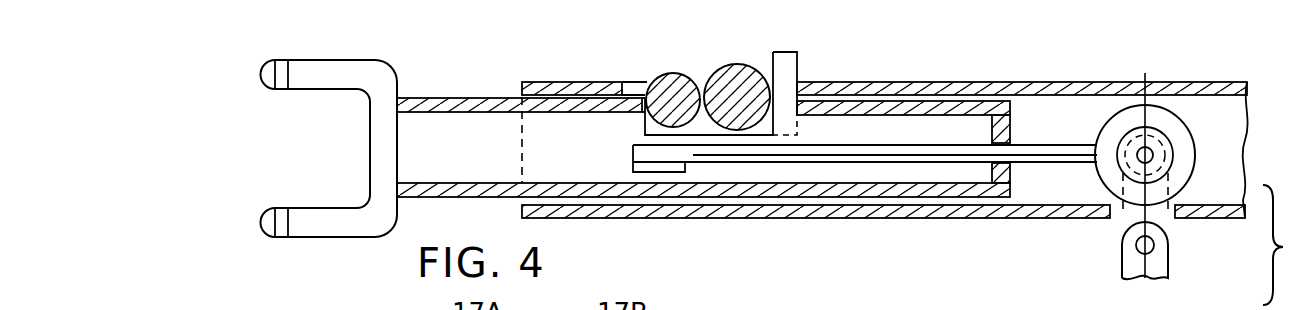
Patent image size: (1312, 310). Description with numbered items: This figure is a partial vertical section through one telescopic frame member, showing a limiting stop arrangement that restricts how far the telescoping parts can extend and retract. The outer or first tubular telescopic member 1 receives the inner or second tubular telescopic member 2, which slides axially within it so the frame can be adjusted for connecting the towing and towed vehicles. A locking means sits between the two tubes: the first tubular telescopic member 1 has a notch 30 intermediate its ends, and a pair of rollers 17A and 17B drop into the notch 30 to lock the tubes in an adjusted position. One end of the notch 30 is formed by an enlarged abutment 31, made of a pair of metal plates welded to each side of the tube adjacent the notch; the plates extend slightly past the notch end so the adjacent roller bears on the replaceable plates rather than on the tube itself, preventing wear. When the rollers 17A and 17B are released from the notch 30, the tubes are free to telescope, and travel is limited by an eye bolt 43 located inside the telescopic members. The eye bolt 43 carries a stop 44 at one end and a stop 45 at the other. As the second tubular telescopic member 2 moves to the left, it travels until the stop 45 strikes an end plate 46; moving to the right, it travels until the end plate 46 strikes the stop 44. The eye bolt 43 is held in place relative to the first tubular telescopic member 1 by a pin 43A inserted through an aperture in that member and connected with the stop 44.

The first tubular telescopic member 1 is at (1003, 78).
The second tubular telescopic member 2 is at (448, 98).
The roller 17A is at (658, 75).
The roller 17B is at (743, 64).
The notch 30 is at (765, 127).
The abutment 31 is at (797, 60).
The eye bolt 43 is at (845, 170).
The pin 43A is at (1160, 262).
The stop 44 is at (1195, 140).
The stop 45 is at (633, 166).
The end plate 46 is at (997, 171).